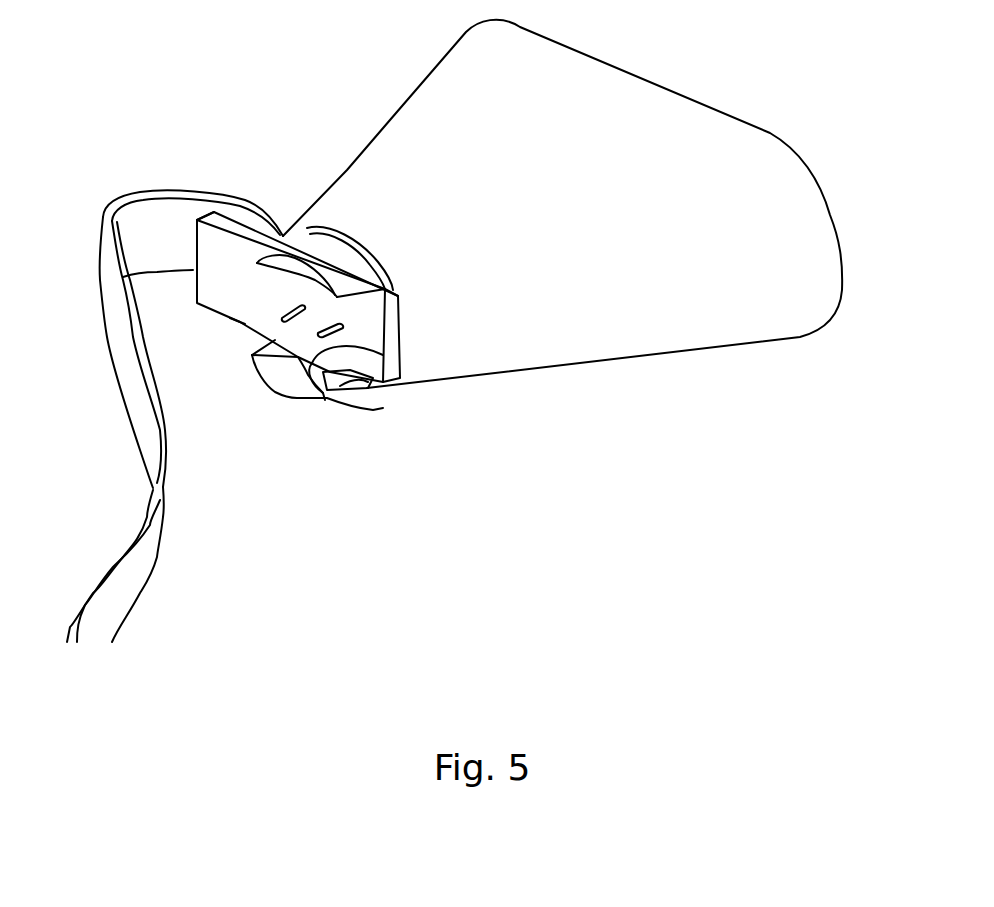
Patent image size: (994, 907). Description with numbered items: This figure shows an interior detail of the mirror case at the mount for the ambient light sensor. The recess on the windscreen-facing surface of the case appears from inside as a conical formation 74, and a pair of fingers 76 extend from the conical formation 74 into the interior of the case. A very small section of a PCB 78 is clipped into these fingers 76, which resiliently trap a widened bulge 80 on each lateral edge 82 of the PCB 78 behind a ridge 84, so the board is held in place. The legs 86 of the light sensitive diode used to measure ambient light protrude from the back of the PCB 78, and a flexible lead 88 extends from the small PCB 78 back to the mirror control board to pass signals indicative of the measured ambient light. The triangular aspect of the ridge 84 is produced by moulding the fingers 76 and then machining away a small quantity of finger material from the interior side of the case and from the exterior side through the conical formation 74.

The conical formation 74 is at (665, 340).
The fingers 76 is at (313, 252).
The PCB 78 is at (212, 260).
The widened bulge 80 is at (383, 355).
The lateral edge 82 is at (235, 226).
The ridge 84 is at (345, 400).
The legs 86 is at (317, 327).
The flexible lead 88 is at (132, 376).